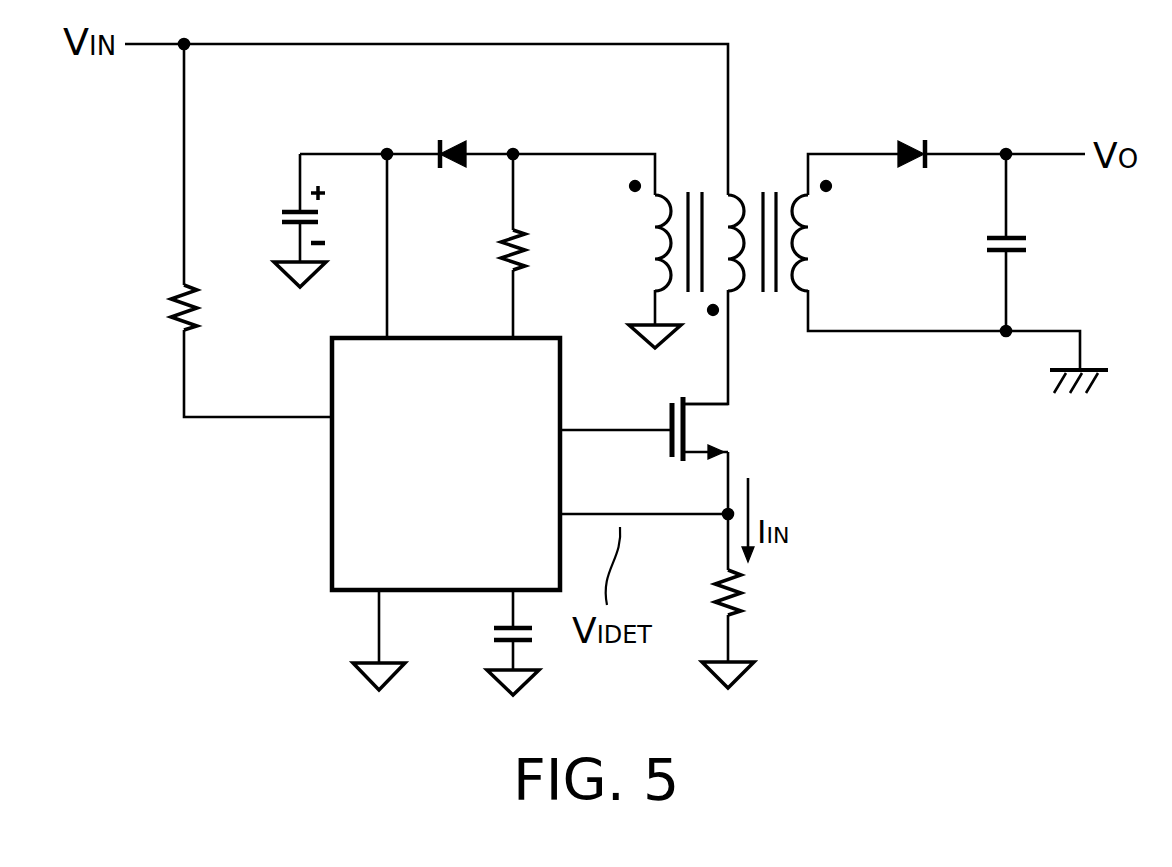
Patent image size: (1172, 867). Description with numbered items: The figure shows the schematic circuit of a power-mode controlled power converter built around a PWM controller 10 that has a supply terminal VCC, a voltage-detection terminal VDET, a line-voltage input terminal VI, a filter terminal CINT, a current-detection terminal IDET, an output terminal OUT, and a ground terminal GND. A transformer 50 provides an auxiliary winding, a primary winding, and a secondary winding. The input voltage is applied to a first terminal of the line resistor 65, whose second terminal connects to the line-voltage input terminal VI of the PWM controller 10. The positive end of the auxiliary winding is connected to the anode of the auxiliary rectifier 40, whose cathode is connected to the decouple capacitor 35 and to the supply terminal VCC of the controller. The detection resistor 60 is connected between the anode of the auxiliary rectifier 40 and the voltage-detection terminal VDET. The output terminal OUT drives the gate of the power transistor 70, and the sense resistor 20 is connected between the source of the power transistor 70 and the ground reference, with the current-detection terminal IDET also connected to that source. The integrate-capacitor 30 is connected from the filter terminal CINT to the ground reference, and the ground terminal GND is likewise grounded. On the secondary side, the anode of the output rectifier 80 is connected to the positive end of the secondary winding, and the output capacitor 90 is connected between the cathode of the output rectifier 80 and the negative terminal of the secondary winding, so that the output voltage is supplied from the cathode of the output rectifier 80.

The PWM controller 10 is at (318, 527).
The sense resistor 20 is at (755, 597).
The integrate-capacitor 30 is at (488, 640).
The decouple capacitor 35 is at (278, 218).
The auxiliary rectifier 40 is at (453, 137).
The transformer 50 is at (752, 165).
The detection resistor 60 is at (495, 255).
The line resistor 65 is at (164, 312).
The power transistor 70 is at (732, 430).
The output rectifier 80 is at (912, 137).
The output capacitor 90 is at (1034, 246).